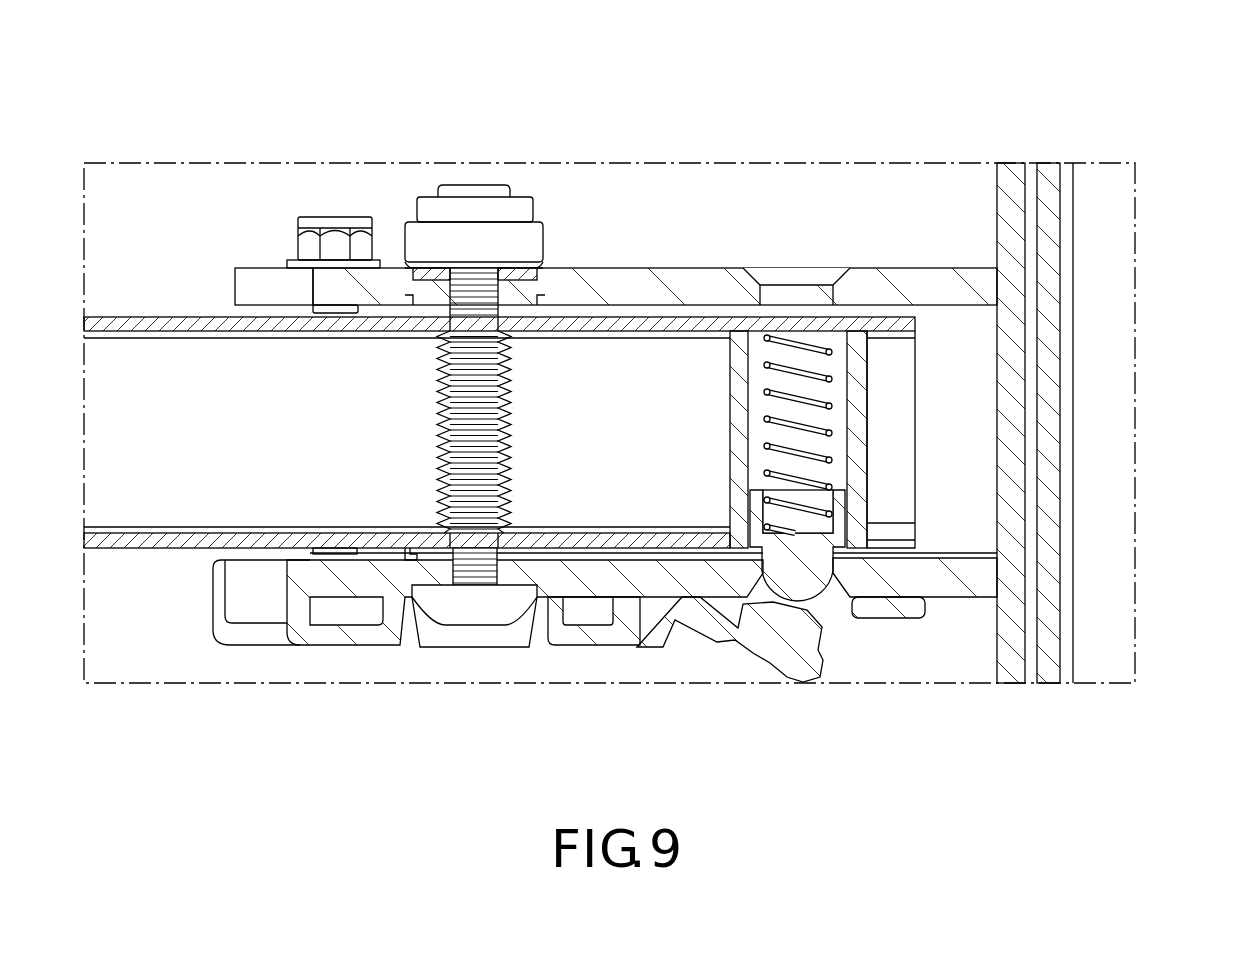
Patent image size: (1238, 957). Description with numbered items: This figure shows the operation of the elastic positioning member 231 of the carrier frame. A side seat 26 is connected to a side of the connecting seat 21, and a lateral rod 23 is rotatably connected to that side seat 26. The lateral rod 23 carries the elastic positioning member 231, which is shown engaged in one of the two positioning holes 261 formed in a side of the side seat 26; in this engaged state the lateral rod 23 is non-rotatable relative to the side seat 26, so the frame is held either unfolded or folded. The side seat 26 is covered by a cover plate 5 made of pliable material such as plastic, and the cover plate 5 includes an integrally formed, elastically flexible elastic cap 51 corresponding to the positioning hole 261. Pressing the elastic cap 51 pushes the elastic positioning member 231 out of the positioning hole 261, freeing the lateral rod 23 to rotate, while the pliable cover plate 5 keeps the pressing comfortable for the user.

The connecting seat 21 is at (1065, 356).
The lateral rod 23 is at (594, 322).
The elastic positioning member 231 is at (845, 448).
The side seat 26 is at (653, 262).
The positioning hole 261 is at (835, 560).
The cover plate 5 is at (575, 638).
The elastic cap 51 is at (775, 652).